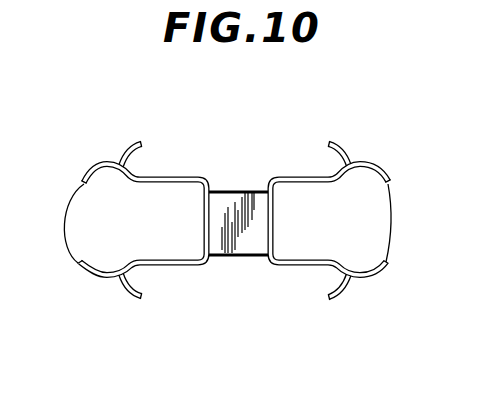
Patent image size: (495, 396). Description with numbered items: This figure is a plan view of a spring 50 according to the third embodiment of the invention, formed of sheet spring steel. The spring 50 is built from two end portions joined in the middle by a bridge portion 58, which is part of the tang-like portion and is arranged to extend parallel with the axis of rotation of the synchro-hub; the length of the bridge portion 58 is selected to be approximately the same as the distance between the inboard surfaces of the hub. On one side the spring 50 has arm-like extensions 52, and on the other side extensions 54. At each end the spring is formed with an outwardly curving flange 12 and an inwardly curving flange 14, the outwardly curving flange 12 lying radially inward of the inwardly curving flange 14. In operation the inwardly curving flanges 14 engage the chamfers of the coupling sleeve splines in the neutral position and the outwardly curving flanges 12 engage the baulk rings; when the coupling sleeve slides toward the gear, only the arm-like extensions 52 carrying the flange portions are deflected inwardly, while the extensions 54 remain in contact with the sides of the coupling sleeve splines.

The spring 50 is at (225, 245).
The arm-like extensions 52 is at (150, 183).
The extensions 54 is at (307, 178).
The bridge portion 58 is at (224, 205).
The outwardly curving flange 12 is at (128, 143).
The inwardly curving flange 14 is at (225, 223).